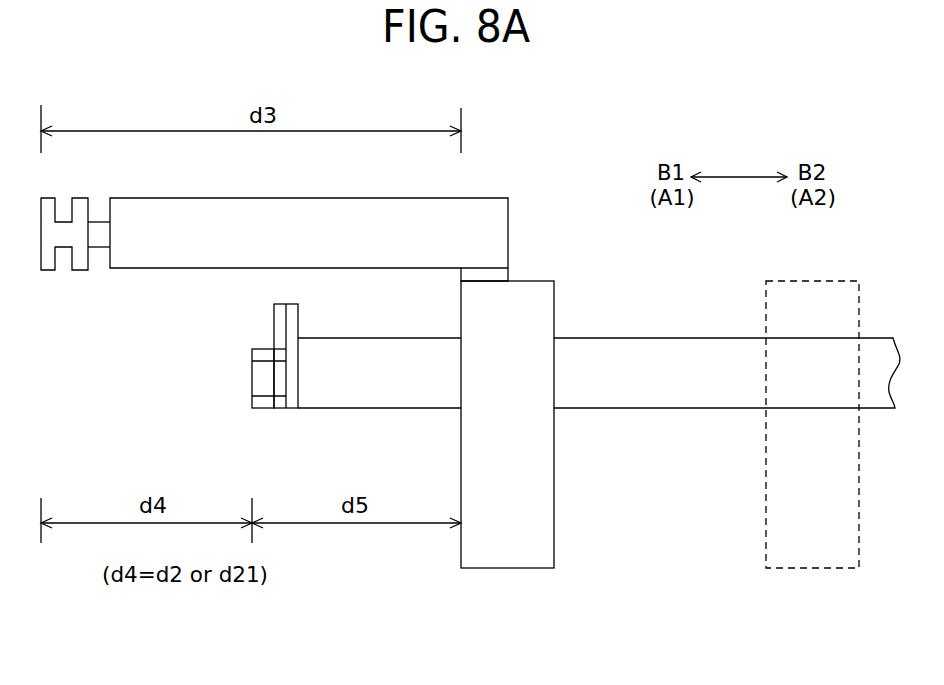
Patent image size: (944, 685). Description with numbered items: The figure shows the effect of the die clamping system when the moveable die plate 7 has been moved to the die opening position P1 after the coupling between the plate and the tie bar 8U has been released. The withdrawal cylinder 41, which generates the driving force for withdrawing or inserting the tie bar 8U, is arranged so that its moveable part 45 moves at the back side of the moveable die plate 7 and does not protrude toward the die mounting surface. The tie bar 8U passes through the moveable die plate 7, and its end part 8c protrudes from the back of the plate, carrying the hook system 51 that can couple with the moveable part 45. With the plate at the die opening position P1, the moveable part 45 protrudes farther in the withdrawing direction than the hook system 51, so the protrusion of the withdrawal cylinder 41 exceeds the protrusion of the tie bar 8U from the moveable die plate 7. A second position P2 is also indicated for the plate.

The moveable part 45 is at (80, 212).
The withdrawal cylinder 41 is at (498, 215).
The moveable die plate 7 is at (538, 288).
The tie bar 8U is at (670, 350).
The hook system 51 is at (265, 398).
The end part 8c is at (292, 398).
The die opening position P1 is at (511, 580).
The second position P2 is at (819, 580).